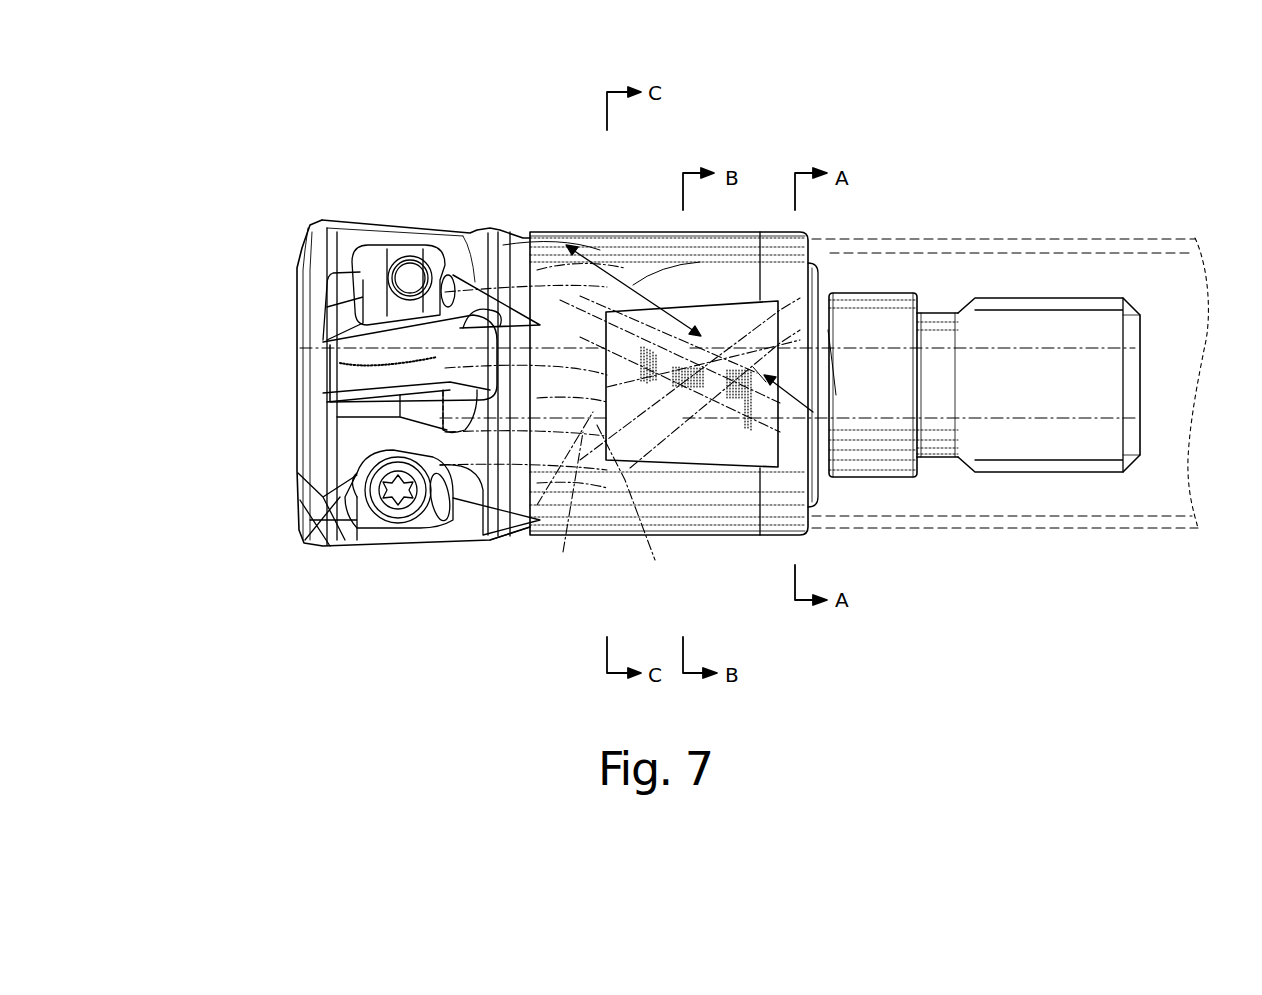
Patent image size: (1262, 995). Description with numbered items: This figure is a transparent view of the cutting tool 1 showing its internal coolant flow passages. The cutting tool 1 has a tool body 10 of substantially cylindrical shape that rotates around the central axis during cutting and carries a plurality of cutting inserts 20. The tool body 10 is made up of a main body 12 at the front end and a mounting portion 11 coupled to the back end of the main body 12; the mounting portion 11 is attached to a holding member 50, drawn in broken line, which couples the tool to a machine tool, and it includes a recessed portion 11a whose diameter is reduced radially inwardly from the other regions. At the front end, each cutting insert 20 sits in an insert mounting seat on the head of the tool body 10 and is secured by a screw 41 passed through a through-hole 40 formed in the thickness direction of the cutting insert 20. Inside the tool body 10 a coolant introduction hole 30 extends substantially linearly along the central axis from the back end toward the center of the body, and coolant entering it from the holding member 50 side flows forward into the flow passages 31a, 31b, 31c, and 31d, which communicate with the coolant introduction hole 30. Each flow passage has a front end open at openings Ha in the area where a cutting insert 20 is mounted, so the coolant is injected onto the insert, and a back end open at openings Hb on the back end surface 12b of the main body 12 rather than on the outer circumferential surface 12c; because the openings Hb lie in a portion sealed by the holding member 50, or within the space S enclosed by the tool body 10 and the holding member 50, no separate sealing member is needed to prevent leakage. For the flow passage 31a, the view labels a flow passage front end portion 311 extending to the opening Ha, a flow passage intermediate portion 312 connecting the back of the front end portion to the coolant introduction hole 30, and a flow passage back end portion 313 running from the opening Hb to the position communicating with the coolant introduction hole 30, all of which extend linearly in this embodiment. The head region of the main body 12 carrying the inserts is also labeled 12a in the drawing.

The cutting tool 1 is at (418, 48).
The tool body 10 is at (930, 100).
The mounting portion 11 is at (880, 318).
The recessed portion 11a is at (930, 458).
The main body 12 is at (775, 222).
The head portion 12a is at (303, 327).
The back end surface 12b is at (812, 270).
The outer circumferential surface 12c is at (635, 280).
The cutting insert 20 is at (320, 373).
The coolant introduction hole 30 is at (1010, 422).
The flow passage 31a is at (578, 260).
The flow passage 31b is at (600, 248).
The flow passage 31c is at (570, 545).
The flow passage 31d is at (640, 540).
The flow passage front end portion 311 is at (503, 245).
The flow passage intermediate portion 312 is at (633, 285).
The flow passage back end portion 313 is at (800, 383).
The through-hole 40 is at (412, 522).
The screw 41 is at (410, 278).
The holding member 50 is at (1075, 240).
The openings Ha is at (453, 275).
The openings Hb is at (830, 395).
The space S is at (940, 268).